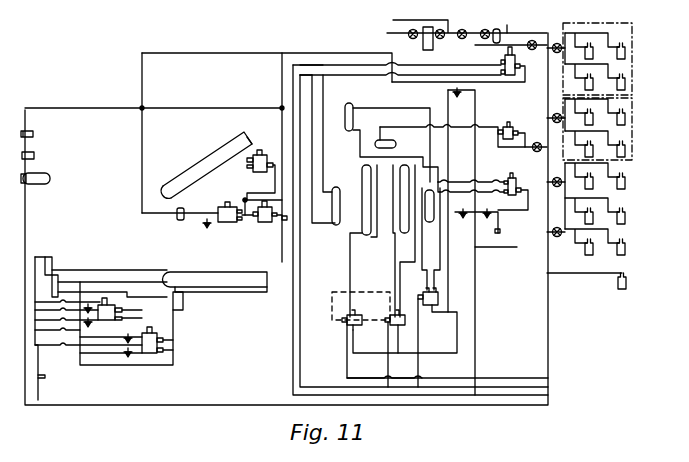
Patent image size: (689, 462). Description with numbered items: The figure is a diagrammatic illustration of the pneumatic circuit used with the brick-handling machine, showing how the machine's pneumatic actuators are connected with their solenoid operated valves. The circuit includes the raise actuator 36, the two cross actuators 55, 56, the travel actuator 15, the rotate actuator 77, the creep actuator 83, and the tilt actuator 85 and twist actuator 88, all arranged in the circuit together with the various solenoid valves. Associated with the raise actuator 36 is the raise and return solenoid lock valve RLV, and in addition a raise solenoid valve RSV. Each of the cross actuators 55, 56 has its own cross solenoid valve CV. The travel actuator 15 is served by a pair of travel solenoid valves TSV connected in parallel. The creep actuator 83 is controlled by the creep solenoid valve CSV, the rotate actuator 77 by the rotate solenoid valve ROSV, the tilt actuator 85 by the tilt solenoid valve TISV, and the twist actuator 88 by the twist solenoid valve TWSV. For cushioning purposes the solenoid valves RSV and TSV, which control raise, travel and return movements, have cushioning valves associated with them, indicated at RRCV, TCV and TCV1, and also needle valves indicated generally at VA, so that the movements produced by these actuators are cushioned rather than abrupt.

The raise actuator 36 is at (193, 168).
The rotate actuator 77 is at (348, 128).
The creep actuator 83 is at (396, 144).
The cross actuator 55 is at (362, 178).
The cross actuator 56 is at (401, 186).
The twist actuator 88 is at (336, 226).
The tilt actuator 85 is at (432, 200).
The travel actuator 15 is at (190, 272).
The raise and return solenoid lock valve RLV is at (252, 168).
The needle valves VA is at (207, 226).
The raise solenoid valve RSV is at (231, 223).
The cushioning valve RRCV is at (266, 223).
The cushioning valve TCV is at (46, 257).
The cushioning valve TCV1 is at (56, 275).
The travel solenoid valve TSV is at (110, 300).
The cross solenoid valve CV is at (347, 326).
The tilt solenoid valve TISV is at (438, 301).
The twist solenoid valve TWSV is at (509, 76).
The creep solenoid valve CSV is at (508, 125).
The rotate solenoid valve ROSV is at (514, 196).